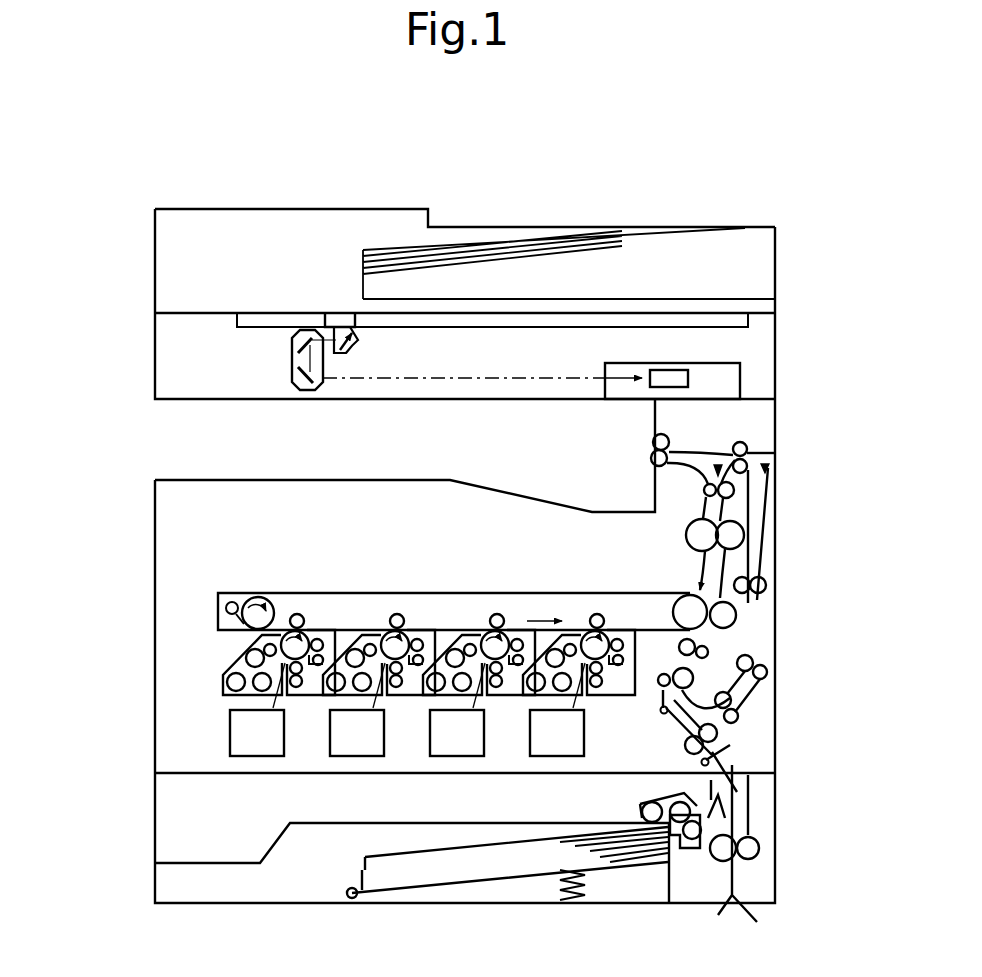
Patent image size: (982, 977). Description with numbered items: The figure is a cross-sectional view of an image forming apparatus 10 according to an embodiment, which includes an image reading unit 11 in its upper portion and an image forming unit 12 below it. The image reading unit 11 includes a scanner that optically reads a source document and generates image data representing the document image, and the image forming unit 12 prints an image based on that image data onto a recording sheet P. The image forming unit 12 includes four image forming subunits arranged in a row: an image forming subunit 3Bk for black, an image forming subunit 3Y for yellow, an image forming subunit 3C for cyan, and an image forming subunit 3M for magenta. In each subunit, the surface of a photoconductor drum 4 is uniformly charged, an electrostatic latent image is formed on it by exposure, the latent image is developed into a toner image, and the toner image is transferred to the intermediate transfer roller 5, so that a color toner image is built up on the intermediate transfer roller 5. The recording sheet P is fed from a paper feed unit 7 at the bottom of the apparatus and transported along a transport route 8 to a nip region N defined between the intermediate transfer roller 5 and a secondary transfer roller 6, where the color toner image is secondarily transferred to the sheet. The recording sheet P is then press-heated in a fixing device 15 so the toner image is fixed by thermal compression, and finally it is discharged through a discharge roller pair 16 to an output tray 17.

The image forming apparatus 10 is at (497, 143).
The image reading unit 11 is at (777, 333).
The image forming unit 12 is at (186, 570).
The output tray 17 is at (182, 480).
The intermediate transfer roller 5 is at (380, 592).
The photoconductor drum 4 is at (289, 632).
The image forming subunit for black 3Bk is at (324, 608).
The image forming subunit for yellow 3Y is at (422, 608).
The image forming subunit for cyan 3C is at (507, 608).
The image forming subunit for magenta 3M is at (617, 608).
The discharge roller pair 16 is at (668, 440).
The fixing device 15 is at (742, 520).
The nip region N is at (718, 590).
The secondary transfer roller 6 is at (737, 613).
The transport route 8 is at (728, 760).
The paper feed unit 7 is at (172, 886).
The recording sheet P is at (376, 843).